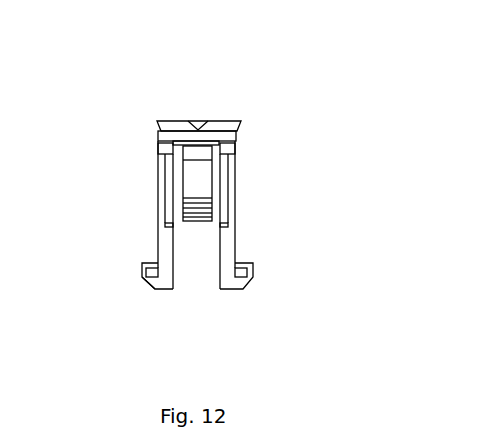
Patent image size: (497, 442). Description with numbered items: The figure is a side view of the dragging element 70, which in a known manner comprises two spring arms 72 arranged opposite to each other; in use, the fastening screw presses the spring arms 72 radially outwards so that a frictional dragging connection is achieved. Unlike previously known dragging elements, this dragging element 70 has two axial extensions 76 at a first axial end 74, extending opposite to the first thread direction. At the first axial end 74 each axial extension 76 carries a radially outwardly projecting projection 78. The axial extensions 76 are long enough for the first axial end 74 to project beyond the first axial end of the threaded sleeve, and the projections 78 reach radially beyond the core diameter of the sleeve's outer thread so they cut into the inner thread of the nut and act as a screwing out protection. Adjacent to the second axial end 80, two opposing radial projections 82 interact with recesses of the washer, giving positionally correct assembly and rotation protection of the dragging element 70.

The dragging element 70 is at (423, 38).
The spring arms 72 is at (200, 185).
The first axial end 74 is at (157, 290).
The axial extensions 76 is at (226, 250).
The projections 78 is at (142, 271).
The second axial end 80 is at (212, 124).
The radial projections 82 is at (197, 129).